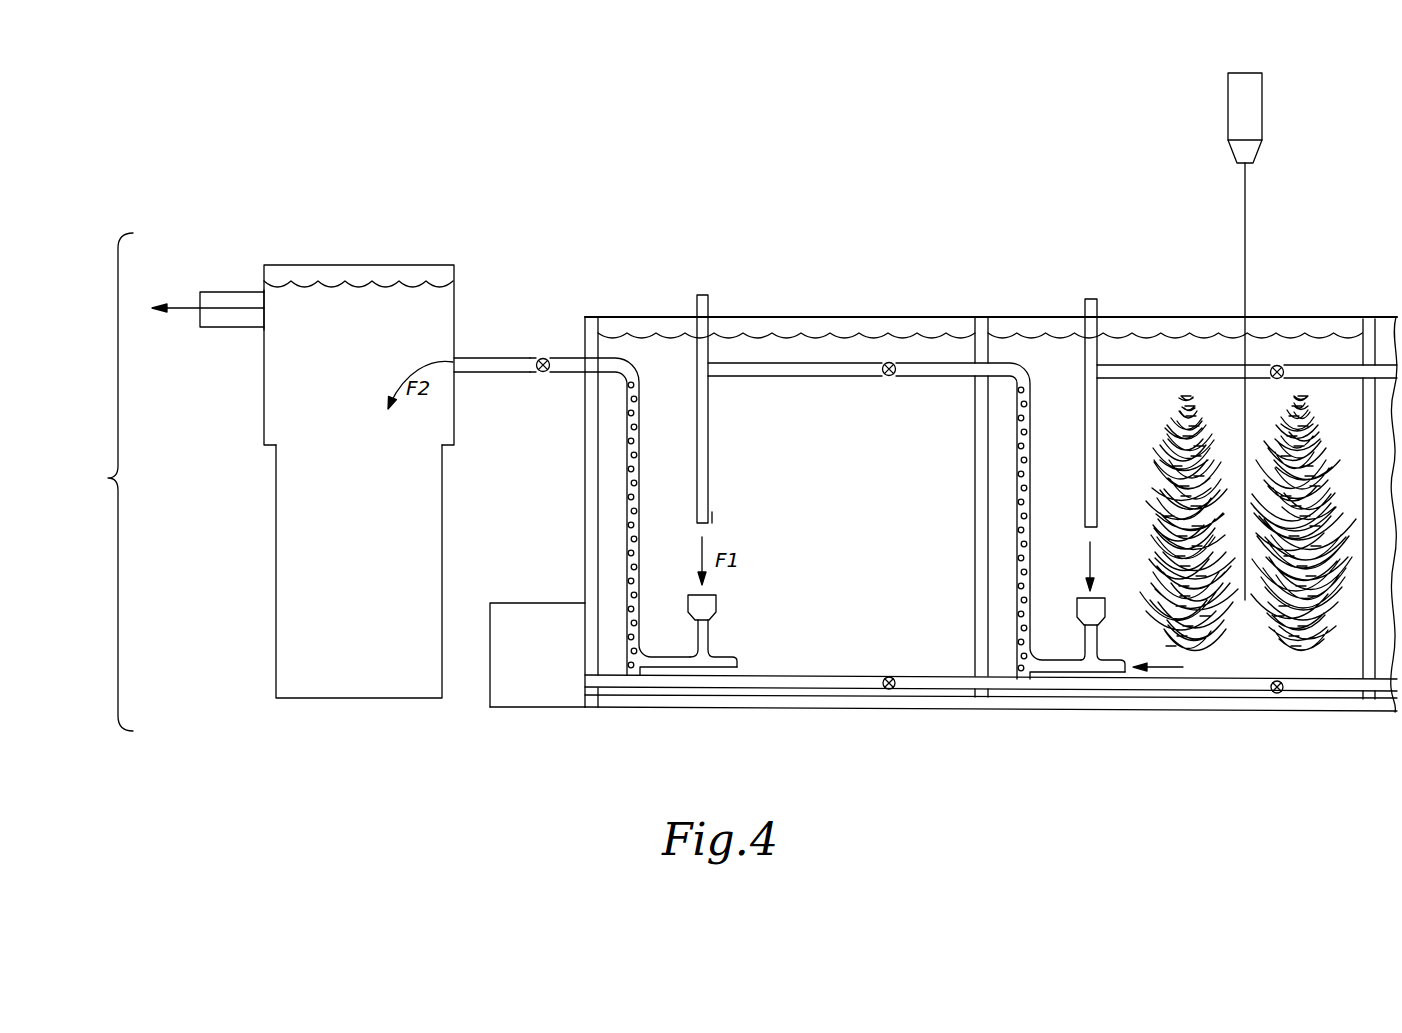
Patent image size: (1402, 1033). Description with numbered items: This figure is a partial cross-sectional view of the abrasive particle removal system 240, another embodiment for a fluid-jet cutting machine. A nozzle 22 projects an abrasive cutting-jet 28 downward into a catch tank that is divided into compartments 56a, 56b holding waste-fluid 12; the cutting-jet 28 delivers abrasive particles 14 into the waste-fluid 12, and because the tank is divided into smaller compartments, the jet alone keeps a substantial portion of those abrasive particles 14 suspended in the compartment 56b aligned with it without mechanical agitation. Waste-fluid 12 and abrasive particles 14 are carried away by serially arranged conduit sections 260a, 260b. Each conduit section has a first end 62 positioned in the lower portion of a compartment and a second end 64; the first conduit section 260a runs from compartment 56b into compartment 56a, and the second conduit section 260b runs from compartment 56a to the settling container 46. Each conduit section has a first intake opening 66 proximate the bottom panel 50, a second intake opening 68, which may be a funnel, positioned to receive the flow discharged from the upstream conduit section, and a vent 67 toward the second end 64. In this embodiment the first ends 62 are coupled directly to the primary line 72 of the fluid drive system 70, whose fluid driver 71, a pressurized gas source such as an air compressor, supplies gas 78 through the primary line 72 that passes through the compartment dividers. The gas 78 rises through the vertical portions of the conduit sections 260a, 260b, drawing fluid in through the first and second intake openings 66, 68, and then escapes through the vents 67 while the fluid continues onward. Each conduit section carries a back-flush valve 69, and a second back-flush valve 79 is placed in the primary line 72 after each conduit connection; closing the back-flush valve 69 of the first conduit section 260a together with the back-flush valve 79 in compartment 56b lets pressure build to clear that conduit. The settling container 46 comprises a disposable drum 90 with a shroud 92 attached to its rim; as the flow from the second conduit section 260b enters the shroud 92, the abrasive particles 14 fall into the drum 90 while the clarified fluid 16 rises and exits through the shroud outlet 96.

The waste-fluid 12 is at (672, 338).
The abrasive particles 14 is at (1156, 429).
The clarified fluid 16 is at (192, 306).
The nozzle 22 is at (1262, 98).
The abrasive cutting-jet 28 is at (1247, 226).
The settling container 46 is at (298, 449).
The bottom panel 50 is at (857, 711).
The compartment 56a is at (784, 340).
The compartment 56b is at (1174, 342).
The first end 62 is at (678, 632).
The second end 64 is at (461, 374).
The first intake opening 66 is at (738, 667).
The vent 67 is at (712, 305).
The second intake opening 68 is at (688, 604).
The back-flush valve 69 is at (539, 360).
The fluid drive system 70 is at (478, 720).
The fluid driver 71 is at (510, 603).
The primary line 72 is at (795, 690).
The gas 78 is at (627, 494).
The second back-flush valve 79 is at (893, 690).
The disposable drum 90 is at (276, 596).
The shroud 92 is at (346, 265).
The outlet 96 is at (267, 298).
The abrasive particle removal system 240 is at (99, 482).
The first conduit section 260a is at (790, 376).
The second conduit section 260b is at (560, 357).